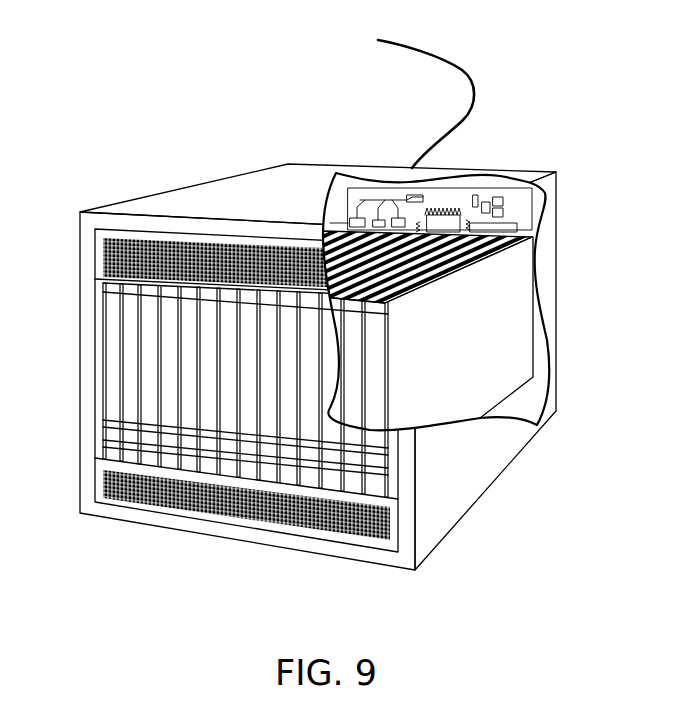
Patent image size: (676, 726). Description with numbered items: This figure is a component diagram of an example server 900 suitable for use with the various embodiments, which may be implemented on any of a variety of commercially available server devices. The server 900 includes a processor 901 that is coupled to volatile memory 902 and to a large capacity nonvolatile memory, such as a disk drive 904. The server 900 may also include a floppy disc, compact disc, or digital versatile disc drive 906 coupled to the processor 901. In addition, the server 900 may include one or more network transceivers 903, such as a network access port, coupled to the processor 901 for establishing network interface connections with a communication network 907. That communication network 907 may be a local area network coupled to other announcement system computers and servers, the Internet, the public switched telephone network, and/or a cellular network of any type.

The server 900 is at (227, 177).
The processor 901 is at (443, 227).
The volatile memory 902 is at (508, 227).
The network transceiver 903 is at (205, 390).
The disk drive 904 is at (350, 222).
The disc drive 906 is at (127, 365).
The communication network 907 is at (475, 84).